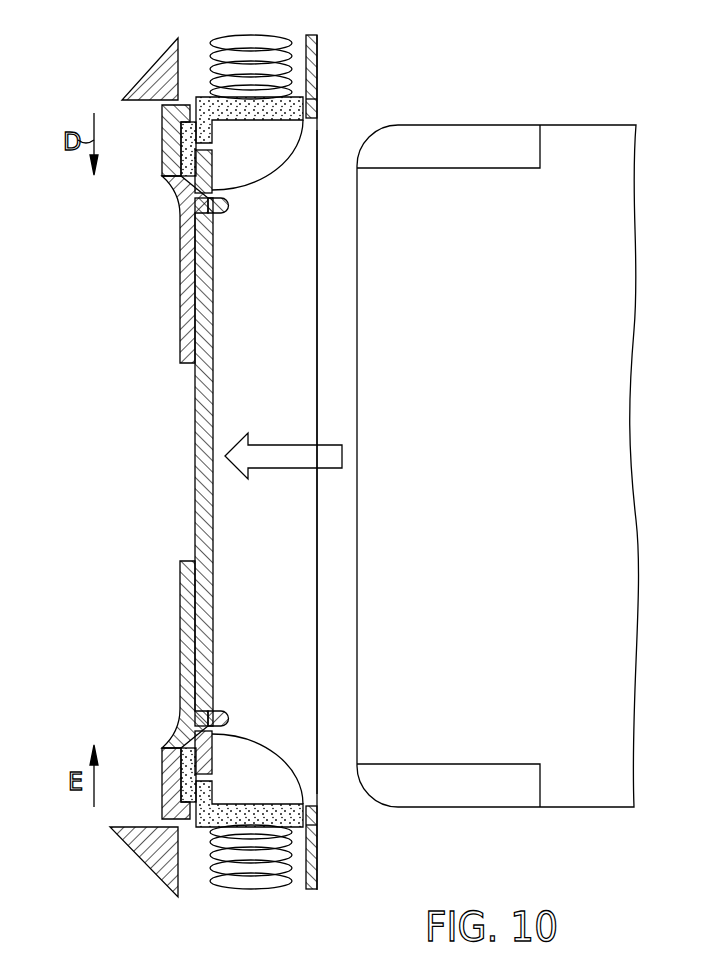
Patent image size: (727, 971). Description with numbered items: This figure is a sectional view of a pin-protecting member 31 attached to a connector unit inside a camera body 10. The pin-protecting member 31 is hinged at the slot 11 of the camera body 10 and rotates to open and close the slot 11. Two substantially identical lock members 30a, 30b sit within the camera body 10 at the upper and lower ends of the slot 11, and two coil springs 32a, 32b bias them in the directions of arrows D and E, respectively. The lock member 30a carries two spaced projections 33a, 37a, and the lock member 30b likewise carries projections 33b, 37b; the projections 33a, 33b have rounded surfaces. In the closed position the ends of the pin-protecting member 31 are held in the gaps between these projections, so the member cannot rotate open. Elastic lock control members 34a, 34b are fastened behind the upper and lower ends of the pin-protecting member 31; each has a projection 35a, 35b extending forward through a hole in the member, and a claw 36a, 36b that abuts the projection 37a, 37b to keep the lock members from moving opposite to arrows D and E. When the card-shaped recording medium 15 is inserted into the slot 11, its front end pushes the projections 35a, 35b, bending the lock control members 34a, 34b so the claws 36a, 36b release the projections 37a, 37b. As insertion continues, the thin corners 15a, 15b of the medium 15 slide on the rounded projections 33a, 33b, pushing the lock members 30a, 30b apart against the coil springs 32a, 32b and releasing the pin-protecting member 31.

The camera body 10 is at (318, 57).
The slot 11 is at (307, 167).
The card-shaped recording medium 15 is at (562, 133).
The thin corner 15a is at (440, 125).
The thin corner 15b is at (436, 802).
The lock member 30a is at (313, 102).
The lock member 30b is at (313, 816).
The pin-protecting member 31 is at (213, 522).
The coil spring 32a is at (267, 35).
The coil spring 32b is at (245, 878).
The projection 33a is at (252, 170).
The projection 33b is at (242, 753).
The lock control member 34a is at (180, 298).
The lock control member 34b is at (180, 626).
The projection 35a is at (228, 207).
The projection 35b is at (220, 712).
The claw 36a is at (163, 118).
The claw 36b is at (160, 803).
The projection 37a is at (181, 152).
The projection 37b is at (165, 762).